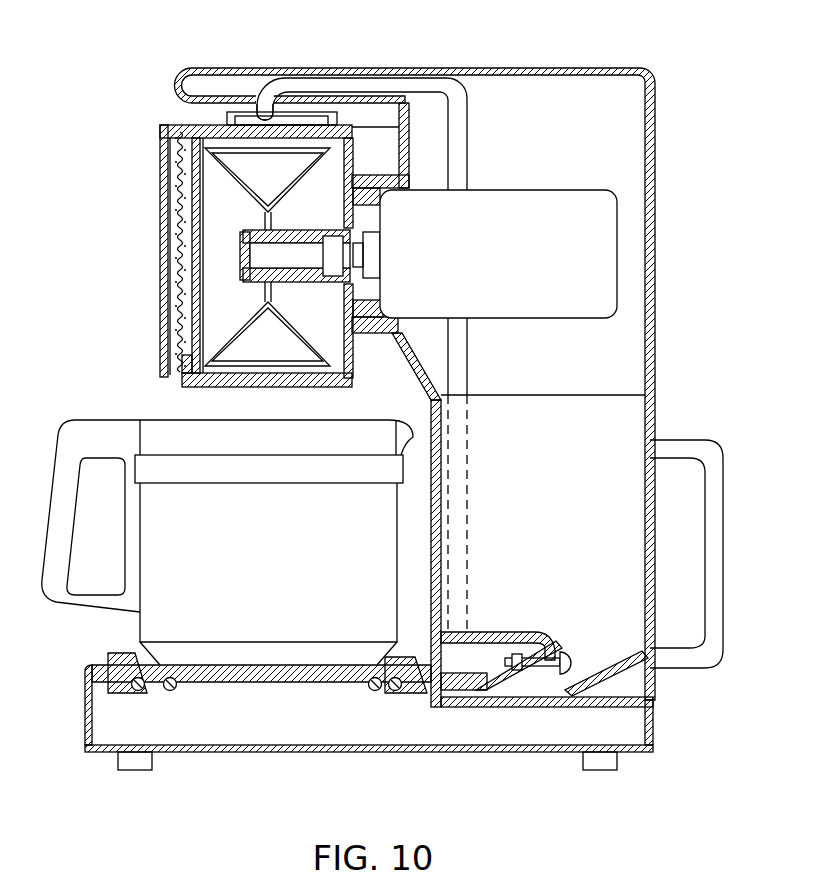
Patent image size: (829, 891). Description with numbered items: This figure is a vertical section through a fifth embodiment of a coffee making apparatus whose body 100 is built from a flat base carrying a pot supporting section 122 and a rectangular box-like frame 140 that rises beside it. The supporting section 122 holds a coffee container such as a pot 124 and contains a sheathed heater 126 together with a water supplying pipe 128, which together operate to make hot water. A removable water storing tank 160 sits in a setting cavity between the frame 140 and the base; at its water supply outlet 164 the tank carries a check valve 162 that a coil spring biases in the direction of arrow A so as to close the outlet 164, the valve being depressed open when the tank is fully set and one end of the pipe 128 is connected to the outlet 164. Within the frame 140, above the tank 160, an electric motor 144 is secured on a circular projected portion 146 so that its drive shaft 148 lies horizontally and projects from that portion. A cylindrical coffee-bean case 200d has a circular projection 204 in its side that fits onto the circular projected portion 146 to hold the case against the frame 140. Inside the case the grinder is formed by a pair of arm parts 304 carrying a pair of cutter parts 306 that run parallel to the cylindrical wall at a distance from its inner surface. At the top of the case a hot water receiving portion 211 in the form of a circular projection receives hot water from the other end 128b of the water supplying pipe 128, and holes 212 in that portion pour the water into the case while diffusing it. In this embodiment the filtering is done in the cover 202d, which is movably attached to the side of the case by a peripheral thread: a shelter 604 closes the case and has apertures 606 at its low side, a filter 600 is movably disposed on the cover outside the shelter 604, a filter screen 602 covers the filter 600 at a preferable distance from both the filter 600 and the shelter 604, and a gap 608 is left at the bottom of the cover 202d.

The body 100 is at (678, 353).
The supporting section 122 is at (262, 676).
The pot 124 is at (139, 549).
The sheathed heater 126 is at (363, 692).
The water supplying pipe 128 is at (367, 86).
The other end of the water supplying pipe 128b is at (262, 100).
The frame 140 is at (640, 110).
The electric motor 144 is at (547, 318).
The circular projected portion 146 is at (378, 174).
The drive shaft 148 is at (283, 257).
The water storing tank 160 is at (652, 573).
The check valve 162 is at (570, 657).
The water supply outlet 164 is at (537, 681).
The case 200d is at (364, 125).
The cover 202d is at (154, 185).
The circular projection 204 is at (367, 334).
The hot water receiving portion 211 is at (245, 110).
The holes 212 is at (297, 127).
The arm parts 304 is at (240, 165).
The cutter parts 306 is at (238, 152).
The filter 600 is at (182, 267).
The filter screen 602 is at (160, 245).
The shelter 604 is at (193, 310).
The apertures 606 is at (192, 356).
The gap 608 is at (177, 378).
The arrow A is at (578, 652).